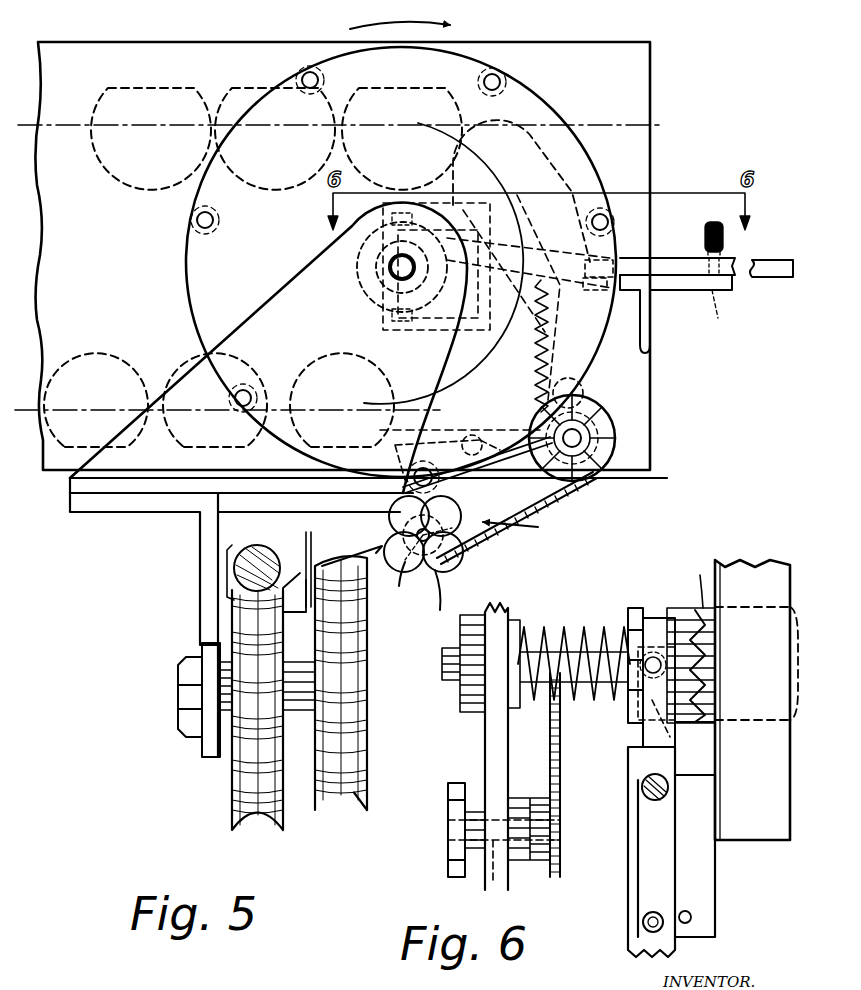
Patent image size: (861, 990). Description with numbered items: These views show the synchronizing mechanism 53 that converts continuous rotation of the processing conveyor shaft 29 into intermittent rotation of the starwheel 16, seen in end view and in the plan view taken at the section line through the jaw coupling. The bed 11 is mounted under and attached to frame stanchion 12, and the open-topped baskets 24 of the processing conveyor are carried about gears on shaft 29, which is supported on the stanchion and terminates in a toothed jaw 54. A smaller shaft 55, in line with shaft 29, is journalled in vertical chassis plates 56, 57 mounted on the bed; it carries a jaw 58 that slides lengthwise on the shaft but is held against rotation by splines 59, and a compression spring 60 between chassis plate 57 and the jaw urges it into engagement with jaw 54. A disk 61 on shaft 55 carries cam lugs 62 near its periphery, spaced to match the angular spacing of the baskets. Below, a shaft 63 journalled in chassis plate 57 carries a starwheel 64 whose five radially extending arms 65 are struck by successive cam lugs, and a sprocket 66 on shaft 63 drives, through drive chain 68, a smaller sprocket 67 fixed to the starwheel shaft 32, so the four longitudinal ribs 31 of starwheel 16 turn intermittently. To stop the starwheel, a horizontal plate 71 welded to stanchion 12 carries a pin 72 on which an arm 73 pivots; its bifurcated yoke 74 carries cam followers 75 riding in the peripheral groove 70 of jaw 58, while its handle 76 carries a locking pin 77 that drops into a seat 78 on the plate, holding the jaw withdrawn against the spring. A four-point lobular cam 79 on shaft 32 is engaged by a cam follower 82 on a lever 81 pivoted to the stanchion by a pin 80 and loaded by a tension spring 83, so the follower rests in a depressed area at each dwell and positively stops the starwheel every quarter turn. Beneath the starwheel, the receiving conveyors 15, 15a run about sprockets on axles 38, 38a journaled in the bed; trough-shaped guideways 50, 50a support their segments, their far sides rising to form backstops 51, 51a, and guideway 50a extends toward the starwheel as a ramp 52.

In FIG. 5, the bed 11 is at (125, 518).
In FIG. 5, the frame stanchion 12 is at (650, 60).
In FIG. 6, the frame stanchion 12 is at (752, 681).
In FIG. 5, the receiving conveyor 15 is at (338, 812).
In FIG. 5, the receiving conveyor 15a is at (230, 798).
In FIG. 5, the starwheel 16 is at (521, 526).
In FIG. 5, the basket 24 is at (118, 182).
In FIG. 6, the shaft 29 is at (735, 722).
In FIG. 5, the longitudinal rib 31 is at (440, 599).
In FIG. 5, the shaft 32 is at (398, 585).
In FIG. 5, the axle 38 is at (305, 685).
In FIG. 5, the axle 38a is at (196, 735).
In FIG. 5, the guideway 50 is at (372, 600).
In FIG. 5, the guideway 50a is at (297, 613).
In FIG. 5, the backstop 51 is at (277, 553).
In FIG. 5, the backstop 51a is at (246, 546).
In FIG. 5, the ramp 52 is at (320, 562).
In FIG. 5, the synchronizing mechanism 53 is at (596, 140).
In FIG. 6, the toothed jaw 54 is at (701, 581).
In FIG. 5, the shaft 55 is at (398, 275).
In FIG. 6, the shaft 55 is at (532, 700).
In FIG. 5, the vertical chassis plate 56 is at (260, 320).
In FIG. 5, the vertical chassis plate 57 is at (384, 481).
In FIG. 6, the vertical chassis plate 57 is at (485, 753).
In FIG. 5, the jaw 58 is at (376, 280).
In FIG. 6, the jaw 58 is at (678, 608).
In FIG. 5, the splines 59 is at (363, 256).
In FIG. 6, the splines 59 is at (605, 700).
In FIG. 6, the compression spring 60 is at (552, 640).
In FIG. 5, the disk 61 is at (464, 56).
In FIG. 5, the cam lug 62 is at (502, 78).
In FIG. 5, the shaft 63 is at (584, 462).
In FIG. 6, the shaft 63 is at (504, 862).
In FIG. 5, the starwheel 64 is at (608, 424).
In FIG. 6, the starwheel 64 is at (450, 858).
In FIG. 5, the radially extending arm 65 is at (583, 392).
In FIG. 5, the sprocket 66 is at (555, 470).
In FIG. 6, the sprocket 66 is at (540, 862).
In FIG. 5, the sprocket 67 is at (455, 541).
In FIG. 5, the drive chain 68 is at (548, 502).
In FIG. 6, the drive chain 68 is at (562, 772).
In FIG. 5, the peripheral groove 70 is at (368, 298).
In FIG. 6, the peripheral groove 70 is at (652, 618).
In FIG. 5, the horizontal plate 71 is at (665, 292).
In FIG. 6, the horizontal plate 71 is at (716, 877).
In FIG. 5, the pin 72 is at (614, 216).
In FIG. 6, the pin 72 is at (642, 792).
In FIG. 5, the arm 73 is at (664, 256).
In FIG. 6, the arm 73 is at (645, 823).
In FIG. 5, the yoke 74 is at (492, 244).
In FIG. 6, the yoke 74 is at (640, 738).
In FIG. 5, the cam follower 75 is at (402, 330).
In FIG. 6, the cam follower 75 is at (695, 748).
In FIG. 5, the handle 76 is at (775, 278).
In FIG. 5, the locking pin 77 is at (727, 252).
In FIG. 6, the locking pin 77 is at (642, 928).
In FIG. 5, the seat 78 is at (721, 316).
In FIG. 6, the seat 78 is at (692, 917).
In FIG. 5, the lobular cam 79 is at (457, 563).
In FIG. 5, the pin 80 is at (480, 430).
In FIG. 5, the lever 81 is at (436, 481).
In FIG. 5, the cam follower 82 is at (466, 437).
In FIG. 5, the tension spring 83 is at (552, 338).